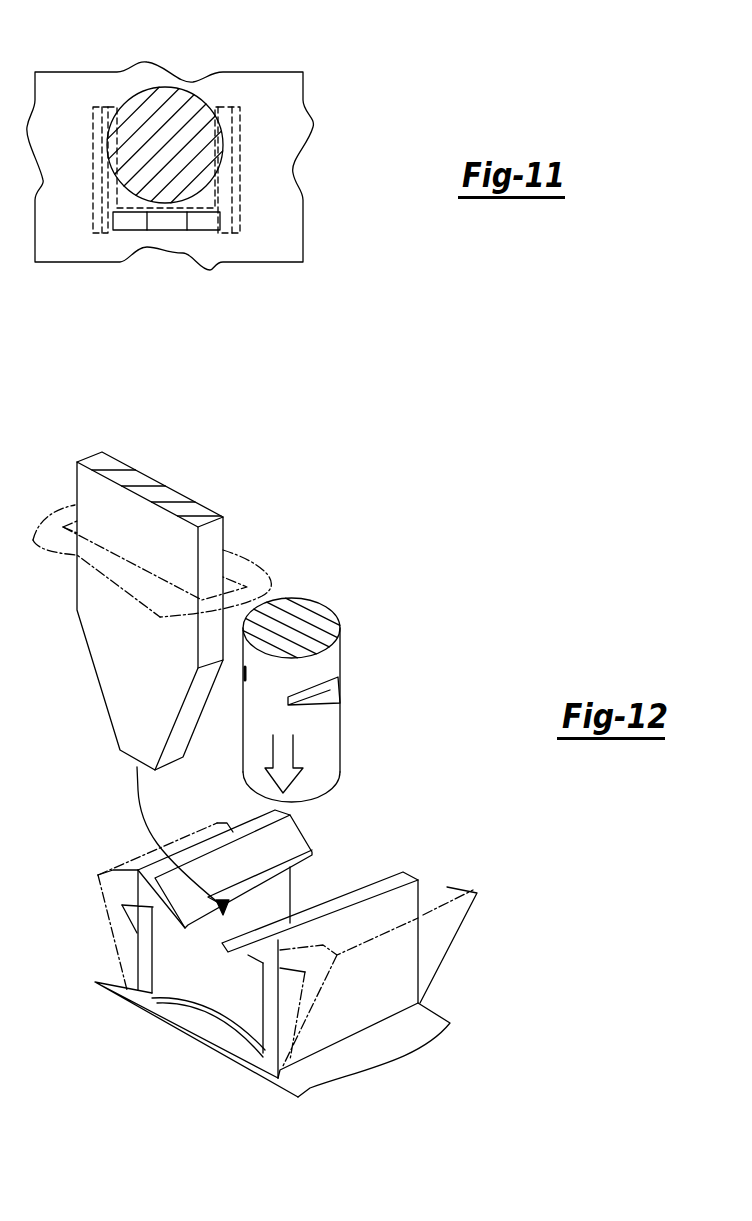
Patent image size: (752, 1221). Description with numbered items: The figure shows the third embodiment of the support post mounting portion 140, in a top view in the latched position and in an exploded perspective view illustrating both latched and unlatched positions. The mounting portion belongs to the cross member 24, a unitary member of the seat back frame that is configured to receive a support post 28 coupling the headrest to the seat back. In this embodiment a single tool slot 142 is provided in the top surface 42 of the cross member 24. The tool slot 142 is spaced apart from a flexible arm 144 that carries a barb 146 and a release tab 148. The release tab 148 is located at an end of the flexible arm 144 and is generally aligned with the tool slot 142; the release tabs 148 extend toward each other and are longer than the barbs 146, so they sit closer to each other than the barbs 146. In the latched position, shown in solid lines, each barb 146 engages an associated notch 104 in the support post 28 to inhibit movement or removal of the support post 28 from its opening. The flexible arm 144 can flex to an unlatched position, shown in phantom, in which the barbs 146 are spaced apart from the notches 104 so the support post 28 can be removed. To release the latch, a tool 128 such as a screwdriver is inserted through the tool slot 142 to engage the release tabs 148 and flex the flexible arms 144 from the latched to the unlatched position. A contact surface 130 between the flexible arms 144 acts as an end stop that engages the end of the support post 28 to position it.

In FIG. 11, the cross member 24 is at (272, 63).
In FIG. 11, the support post 28 is at (193, 92).
In FIG. 12, the support post 28 is at (298, 607).
In FIG. 11, the top surface 42 is at (282, 250).
In FIG. 12, the notch 104 is at (245, 673).
In FIG. 12, the tool 128 is at (117, 655).
In FIG. 12, the contact surface 130 is at (208, 1012).
In FIG. 12, the support post mounting portion 140 is at (350, 550).
In FIG. 11, the tool slot 142 is at (163, 230).
In FIG. 12, the tool slot 142 is at (233, 583).
In FIG. 11, the flexible arm 144 is at (93, 142).
In FIG. 12, the flexible arm 144 is at (140, 933).
In FIG. 11, the barb 146 is at (108, 107).
In FIG. 12, the barb 146 is at (301, 843).
In FIG. 11, the release tab 148 is at (117, 233).
In FIG. 12, the release tab 148 is at (188, 928).